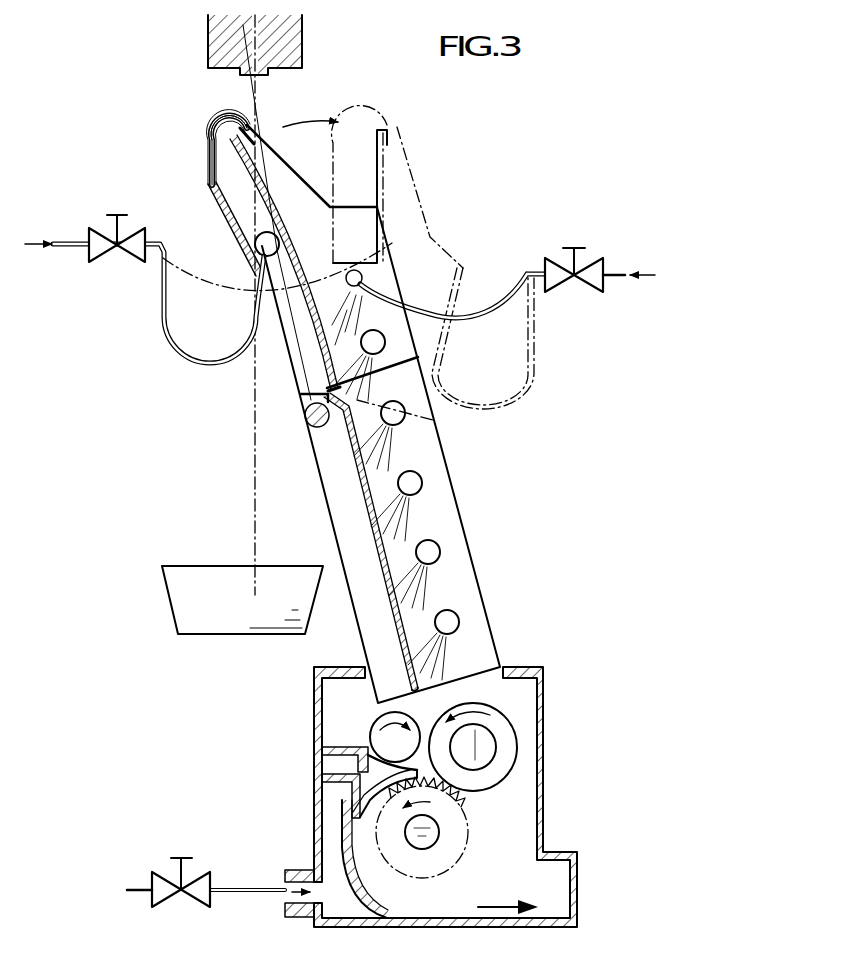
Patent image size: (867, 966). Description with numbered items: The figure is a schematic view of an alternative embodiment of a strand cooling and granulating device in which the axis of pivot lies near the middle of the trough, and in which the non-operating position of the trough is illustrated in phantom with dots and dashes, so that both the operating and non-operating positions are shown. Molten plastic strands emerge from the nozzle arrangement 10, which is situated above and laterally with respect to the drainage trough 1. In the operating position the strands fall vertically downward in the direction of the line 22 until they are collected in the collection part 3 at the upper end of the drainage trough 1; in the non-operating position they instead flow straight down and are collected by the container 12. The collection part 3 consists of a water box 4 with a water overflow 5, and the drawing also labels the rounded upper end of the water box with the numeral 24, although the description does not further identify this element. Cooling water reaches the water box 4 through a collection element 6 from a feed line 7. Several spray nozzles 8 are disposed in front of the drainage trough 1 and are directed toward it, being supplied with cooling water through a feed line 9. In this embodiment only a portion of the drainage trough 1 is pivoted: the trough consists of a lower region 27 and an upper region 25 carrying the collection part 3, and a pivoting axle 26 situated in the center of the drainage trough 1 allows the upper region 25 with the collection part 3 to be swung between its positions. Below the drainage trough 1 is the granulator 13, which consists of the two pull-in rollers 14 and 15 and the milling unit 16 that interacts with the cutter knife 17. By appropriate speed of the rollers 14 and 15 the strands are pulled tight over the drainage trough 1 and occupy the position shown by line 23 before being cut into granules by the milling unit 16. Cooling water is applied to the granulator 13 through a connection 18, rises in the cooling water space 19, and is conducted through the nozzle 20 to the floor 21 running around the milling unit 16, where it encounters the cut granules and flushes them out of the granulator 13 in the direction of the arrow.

The drainage trough 1 is at (282, 410).
The collection part 3 is at (282, 219).
The water box 4 is at (219, 178).
The water overflow 5 is at (244, 142).
The collection element 6 is at (262, 232).
The feed line 7 is at (172, 352).
The spray nozzles 8 is at (414, 484).
The feed line 9 is at (489, 312).
The nozzle arrangement 10 is at (302, 36).
The container 12 is at (186, 600).
The granulator 13 is at (552, 751).
The pull-in roller 14 is at (378, 732).
The pull-in roller 15 is at (498, 727).
The milling unit 16 is at (452, 858).
The cutter knife 17 is at (422, 768).
The connection 18 is at (305, 900).
The cooling water space 19 is at (328, 843).
The nozzle 20 is at (357, 800).
The floor 21 is at (370, 893).
The line 22 is at (254, 518).
The line 23 is at (266, 95).
The rounded hood end 24 is at (226, 124).
The upper region 25 is at (362, 287).
The pivoting axle 26 is at (312, 428).
The lower region 27 is at (392, 584).